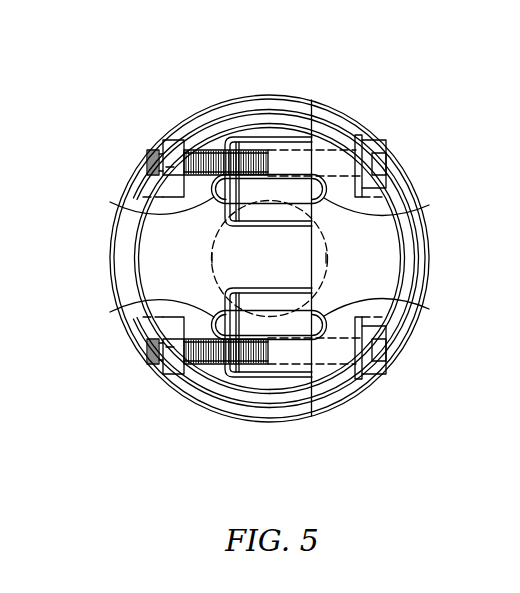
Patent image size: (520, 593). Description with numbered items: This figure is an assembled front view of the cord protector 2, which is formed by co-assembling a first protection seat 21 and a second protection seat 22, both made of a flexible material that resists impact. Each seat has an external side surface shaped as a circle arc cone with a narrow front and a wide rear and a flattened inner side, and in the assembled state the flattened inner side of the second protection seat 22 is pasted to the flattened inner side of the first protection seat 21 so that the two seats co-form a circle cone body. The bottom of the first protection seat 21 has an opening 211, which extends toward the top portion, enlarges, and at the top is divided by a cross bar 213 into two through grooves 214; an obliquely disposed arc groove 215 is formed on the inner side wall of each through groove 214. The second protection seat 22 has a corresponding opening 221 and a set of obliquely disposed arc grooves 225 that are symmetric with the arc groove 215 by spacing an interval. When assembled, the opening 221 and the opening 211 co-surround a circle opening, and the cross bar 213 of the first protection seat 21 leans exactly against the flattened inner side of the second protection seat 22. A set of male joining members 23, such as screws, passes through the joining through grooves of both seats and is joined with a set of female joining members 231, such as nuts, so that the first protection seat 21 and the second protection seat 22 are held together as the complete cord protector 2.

The cord protector 2 is at (390, 108).
The first protection seat 21 is at (162, 274).
The second protection seat 22 is at (376, 275).
The male joining member 23 is at (327, 160).
The opening 211 is at (212, 257).
The cross bar 213 is at (282, 247).
The through groove 214 is at (268, 188).
The arc groove 215 is at (140, 212).
The opening 221 is at (326, 257).
The arc groove 225 is at (394, 213).
The female joining member 231 is at (168, 147).